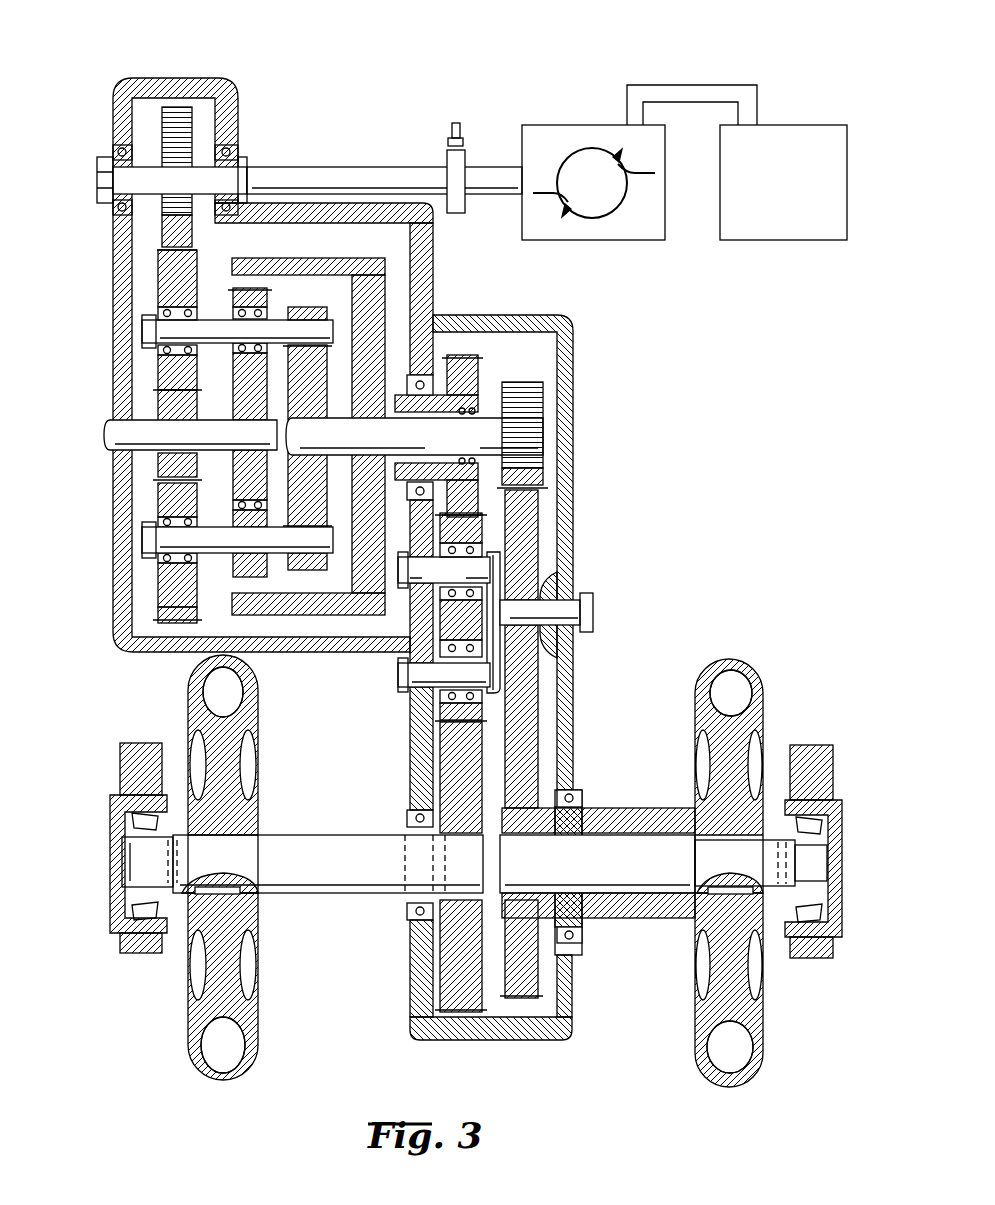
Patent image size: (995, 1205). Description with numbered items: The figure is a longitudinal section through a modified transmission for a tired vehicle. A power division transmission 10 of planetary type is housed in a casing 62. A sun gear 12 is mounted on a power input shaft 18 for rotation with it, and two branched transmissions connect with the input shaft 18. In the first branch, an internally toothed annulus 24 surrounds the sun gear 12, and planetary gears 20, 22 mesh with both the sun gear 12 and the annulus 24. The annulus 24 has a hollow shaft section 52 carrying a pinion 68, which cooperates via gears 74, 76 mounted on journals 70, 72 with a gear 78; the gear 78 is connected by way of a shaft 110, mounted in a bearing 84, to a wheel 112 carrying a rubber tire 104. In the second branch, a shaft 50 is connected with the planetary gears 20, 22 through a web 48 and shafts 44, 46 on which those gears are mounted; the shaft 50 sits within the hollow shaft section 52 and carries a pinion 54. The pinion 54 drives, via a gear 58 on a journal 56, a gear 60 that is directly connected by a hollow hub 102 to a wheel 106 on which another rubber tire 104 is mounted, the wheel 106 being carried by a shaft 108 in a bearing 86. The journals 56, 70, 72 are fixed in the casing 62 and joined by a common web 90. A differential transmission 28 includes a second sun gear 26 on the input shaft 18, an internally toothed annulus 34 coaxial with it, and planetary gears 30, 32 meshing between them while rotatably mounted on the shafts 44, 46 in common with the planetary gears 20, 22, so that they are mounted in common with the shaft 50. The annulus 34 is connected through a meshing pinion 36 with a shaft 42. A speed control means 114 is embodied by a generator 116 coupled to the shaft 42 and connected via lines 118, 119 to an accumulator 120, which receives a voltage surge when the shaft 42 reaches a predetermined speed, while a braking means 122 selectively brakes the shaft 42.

The power division transmission 10 is at (297, 622).
The sun gear 12 is at (233, 393).
The power input shaft 18 is at (213, 450).
The planetary gear 20 is at (243, 507).
The planetary gear 22 is at (233, 302).
The internally toothed annulus 24 is at (262, 262).
The second sun gear 26 is at (172, 410).
The differential transmission 28 is at (177, 640).
The planetary gear 30 is at (165, 583).
The planetary gear 32 is at (167, 290).
The internally toothed annulus 34 is at (160, 640).
The pinion 36 is at (180, 135).
The shaft 42 is at (308, 167).
The shaft 44 is at (280, 542).
The shaft 46 is at (278, 330).
The web 48 is at (311, 311).
The shaft 50 is at (414, 436).
The hollow shaft section 52 is at (400, 397).
The pinion 54 is at (533, 425).
The journal 56 is at (570, 610).
The gear 58 is at (530, 685).
The gear 60 is at (522, 987).
The casing 62 is at (457, 1048).
The pinion 68 is at (468, 382).
The journal 70 is at (444, 570).
The journal 72 is at (415, 675).
The gear 74 is at (450, 608).
The gear 76 is at (450, 710).
The gear 78 is at (445, 755).
The bearing 84 is at (137, 953).
The bearing 86 is at (813, 958).
The common web 90 is at (495, 652).
The hollow hub 102 is at (632, 913).
The rubber tire 104 is at (740, 688).
The wheel 106 is at (723, 762).
The shaft 108 is at (622, 843).
The shaft 110 is at (323, 882).
The wheel 112 is at (228, 983).
The speed control means 114 is at (656, 127).
The generator 116 is at (557, 135).
The line 118 is at (660, 85).
The line 119 is at (709, 102).
The accumulator 120 is at (802, 145).
The braking means 122 is at (443, 136).